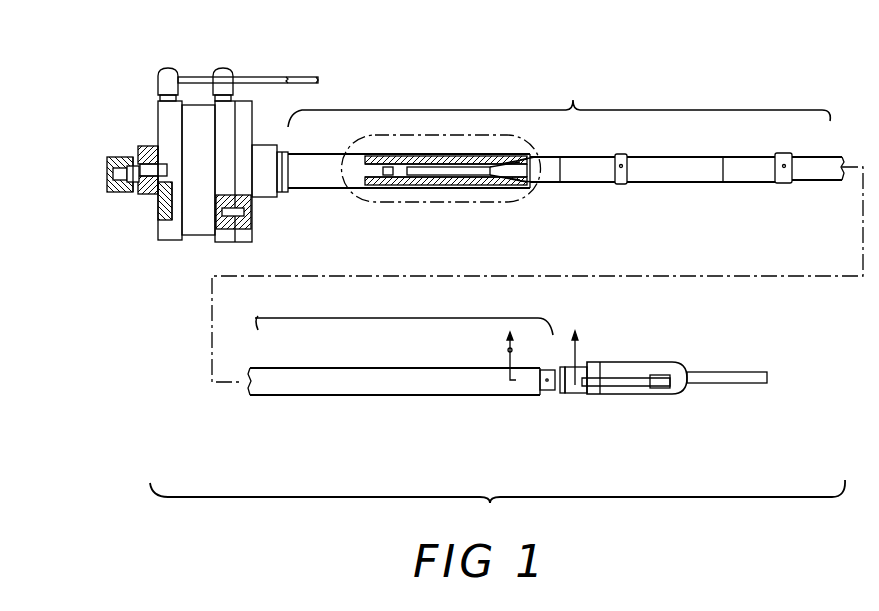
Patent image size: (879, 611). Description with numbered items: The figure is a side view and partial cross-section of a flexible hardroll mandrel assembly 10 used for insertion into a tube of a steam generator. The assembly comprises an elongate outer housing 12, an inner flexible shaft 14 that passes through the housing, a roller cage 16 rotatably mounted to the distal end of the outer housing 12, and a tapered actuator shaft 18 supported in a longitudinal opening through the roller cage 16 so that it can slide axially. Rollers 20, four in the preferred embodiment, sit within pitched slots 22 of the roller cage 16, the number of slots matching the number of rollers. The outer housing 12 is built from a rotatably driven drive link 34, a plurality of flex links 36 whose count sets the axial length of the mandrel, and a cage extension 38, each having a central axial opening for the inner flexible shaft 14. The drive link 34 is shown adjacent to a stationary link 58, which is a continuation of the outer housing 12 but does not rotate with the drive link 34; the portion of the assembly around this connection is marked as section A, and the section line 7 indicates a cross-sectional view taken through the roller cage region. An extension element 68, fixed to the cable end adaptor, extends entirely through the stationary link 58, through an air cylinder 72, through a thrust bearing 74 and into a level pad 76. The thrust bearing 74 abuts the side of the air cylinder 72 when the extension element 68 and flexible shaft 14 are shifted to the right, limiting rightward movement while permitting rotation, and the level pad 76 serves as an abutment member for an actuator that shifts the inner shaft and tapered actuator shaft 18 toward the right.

The mandrel assembly 10 is at (428, 104).
The elongate outer housing 12 is at (559, 101).
The inner flexible shaft 14 is at (518, 190).
The roller cage 16 is at (633, 369).
The tapered actuator shaft 18 is at (708, 372).
The rollers 20 is at (604, 395).
The pitched slots 22 is at (660, 388).
The drive link 34 is at (440, 182).
The flex links 36 is at (670, 175).
The cage extension 38 is at (383, 393).
The stationary link 58 is at (322, 178).
The extension element 68 is at (136, 153).
The air cylinder 72 is at (193, 119).
The thrust bearing 74 is at (146, 144).
The level pad 76 is at (110, 157).
The section line 7- 7 is at (541, 358).
The section A is at (392, 195).